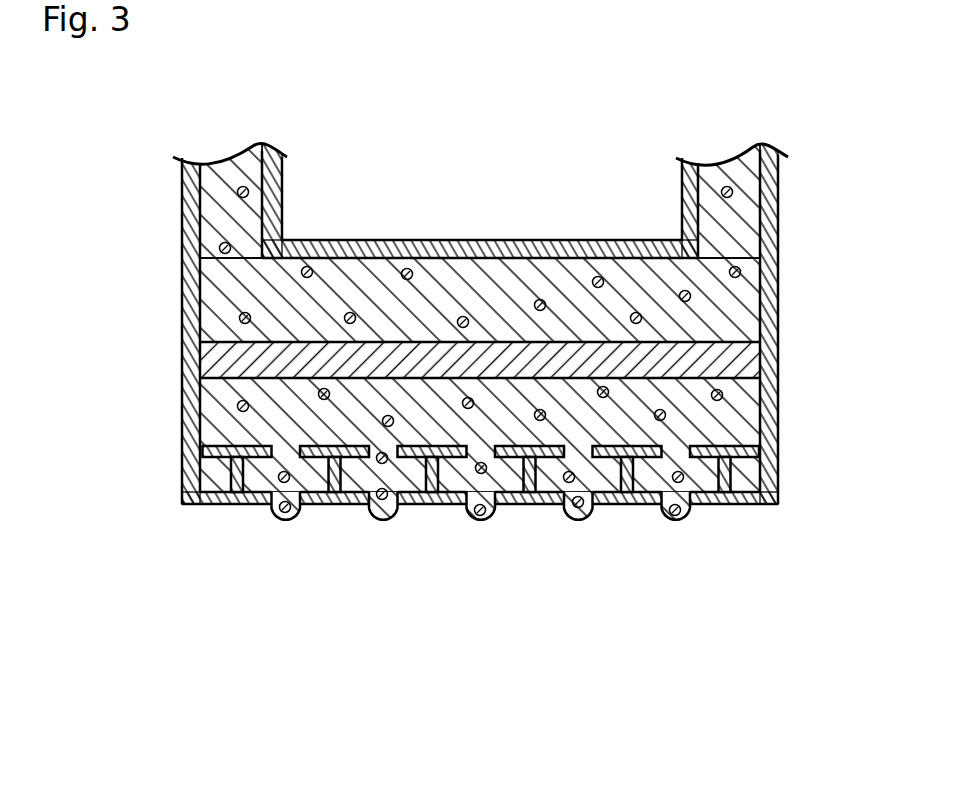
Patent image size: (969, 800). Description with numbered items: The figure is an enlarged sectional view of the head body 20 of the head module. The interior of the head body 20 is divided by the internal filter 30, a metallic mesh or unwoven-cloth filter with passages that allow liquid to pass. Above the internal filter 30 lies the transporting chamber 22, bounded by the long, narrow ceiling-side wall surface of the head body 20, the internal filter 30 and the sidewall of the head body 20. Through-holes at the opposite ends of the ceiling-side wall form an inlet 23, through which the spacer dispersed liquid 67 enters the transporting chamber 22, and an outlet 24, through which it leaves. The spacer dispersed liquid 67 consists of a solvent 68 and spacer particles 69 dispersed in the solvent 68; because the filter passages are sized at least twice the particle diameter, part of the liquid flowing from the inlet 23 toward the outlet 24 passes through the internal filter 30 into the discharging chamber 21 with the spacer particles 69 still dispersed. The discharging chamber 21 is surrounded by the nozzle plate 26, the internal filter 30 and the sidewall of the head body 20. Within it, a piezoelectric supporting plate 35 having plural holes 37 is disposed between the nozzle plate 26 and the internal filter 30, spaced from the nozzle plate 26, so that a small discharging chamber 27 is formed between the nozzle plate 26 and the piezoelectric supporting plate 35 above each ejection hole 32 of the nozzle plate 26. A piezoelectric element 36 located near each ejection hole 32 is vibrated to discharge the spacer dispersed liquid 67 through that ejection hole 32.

The head body 20 is at (123, 127).
The discharging chamber 21 is at (752, 408).
The transporting chamber 22 is at (526, 245).
The inlet 23 is at (730, 258).
The outlet 24 is at (231, 258).
The nozzle plate 26 is at (200, 495).
The small discharging chamber 27 is at (312, 480).
The internal filter 30 is at (327, 353).
The ejection hole 32 is at (274, 508).
The piezoelectric supporting plate 35 is at (208, 447).
The piezoelectric element 36 is at (233, 477).
The holes 37 is at (476, 461).
The spacer dispersed liquid 67 is at (480, 245).
The solvent 68 is at (638, 270).
The spacer particles 69 is at (653, 187).